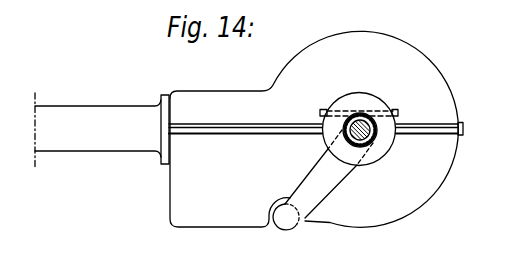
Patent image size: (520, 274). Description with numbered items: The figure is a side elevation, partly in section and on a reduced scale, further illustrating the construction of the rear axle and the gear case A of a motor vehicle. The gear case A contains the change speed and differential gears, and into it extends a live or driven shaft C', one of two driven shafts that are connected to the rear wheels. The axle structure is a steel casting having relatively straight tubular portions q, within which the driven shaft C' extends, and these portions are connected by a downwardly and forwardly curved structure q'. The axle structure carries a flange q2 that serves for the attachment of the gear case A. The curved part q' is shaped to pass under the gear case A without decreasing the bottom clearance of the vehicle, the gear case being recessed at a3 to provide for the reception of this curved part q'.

The gear case A is at (430, 199).
The live or driven shaft c' is at (359, 137).
The tubular portion of axle structure q is at (368, 111).
The flange of axle structure q2 is at (394, 142).
The curved connecting part of axle structure q' is at (329, 189).
The recess of gear case a3 is at (282, 197).